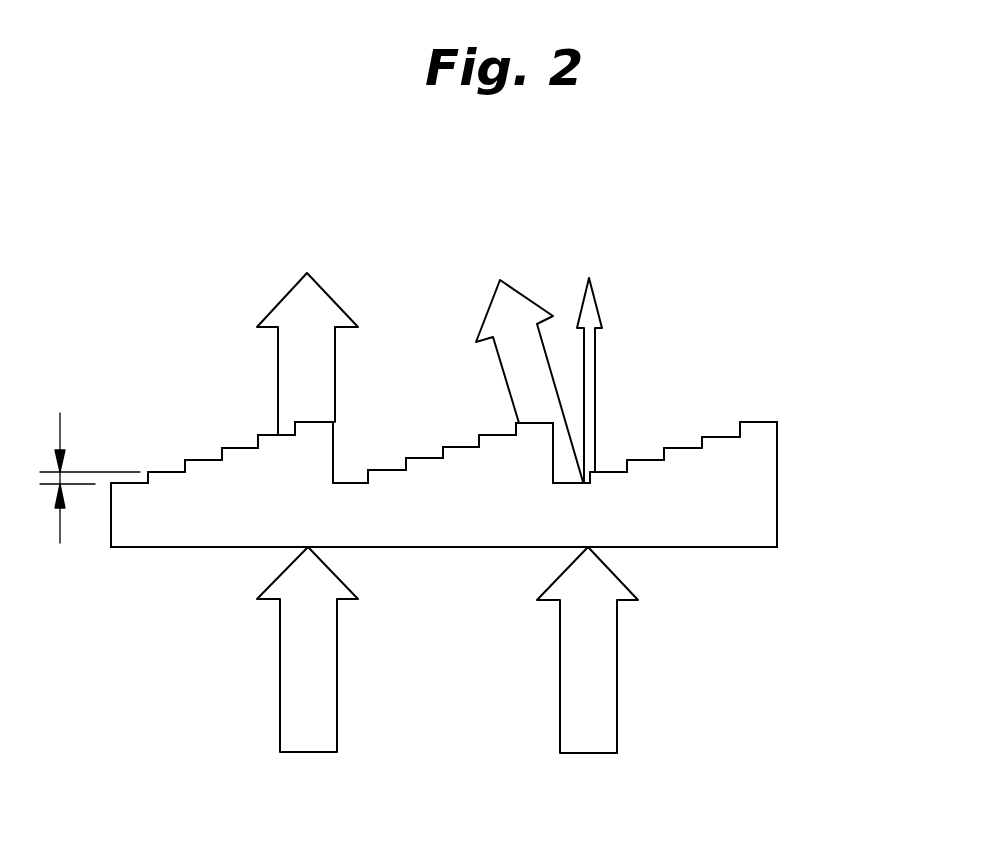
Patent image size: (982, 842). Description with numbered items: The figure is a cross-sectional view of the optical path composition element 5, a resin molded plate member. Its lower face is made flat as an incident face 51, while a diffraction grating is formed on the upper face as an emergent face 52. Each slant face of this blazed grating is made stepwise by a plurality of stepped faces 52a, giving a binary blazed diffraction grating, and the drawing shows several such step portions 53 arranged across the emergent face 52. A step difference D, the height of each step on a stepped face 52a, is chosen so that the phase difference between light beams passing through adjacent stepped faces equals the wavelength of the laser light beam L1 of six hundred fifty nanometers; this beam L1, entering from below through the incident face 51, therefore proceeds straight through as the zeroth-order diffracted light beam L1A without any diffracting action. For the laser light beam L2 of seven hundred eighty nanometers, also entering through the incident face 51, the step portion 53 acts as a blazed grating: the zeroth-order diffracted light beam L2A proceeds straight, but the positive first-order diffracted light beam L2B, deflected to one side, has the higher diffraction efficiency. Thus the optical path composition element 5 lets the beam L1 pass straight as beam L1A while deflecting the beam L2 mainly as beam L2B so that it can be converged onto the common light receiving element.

The optical path composition element 5 is at (777, 488).
The incident face 51 is at (720, 548).
The emergent face 52 is at (766, 422).
The stepped face 52a is at (130, 483).
The step portion 53 is at (308, 376).
The step difference D is at (80, 478).
The laser light beam L1 is at (280, 702).
The laser light beam L2 is at (617, 703).
The zeroth-order diffracted light beam L1A is at (283, 298).
The zeroth-order diffracted light beam L2A is at (592, 288).
The positive first-order diffracted light beam L2B is at (510, 287).